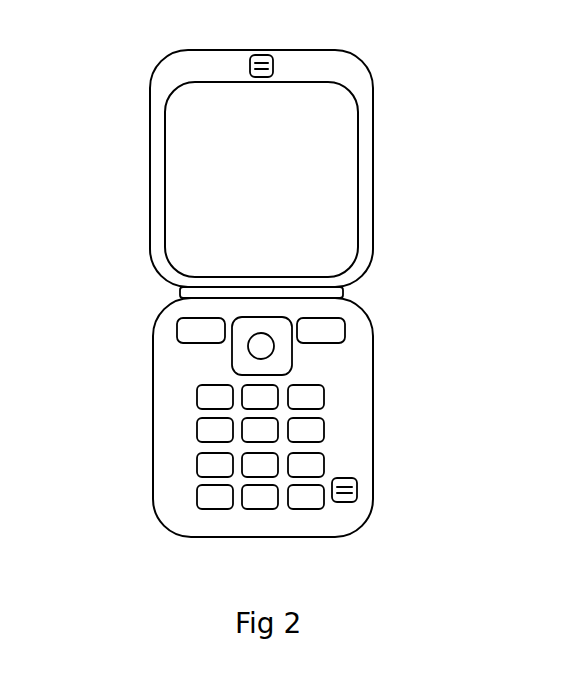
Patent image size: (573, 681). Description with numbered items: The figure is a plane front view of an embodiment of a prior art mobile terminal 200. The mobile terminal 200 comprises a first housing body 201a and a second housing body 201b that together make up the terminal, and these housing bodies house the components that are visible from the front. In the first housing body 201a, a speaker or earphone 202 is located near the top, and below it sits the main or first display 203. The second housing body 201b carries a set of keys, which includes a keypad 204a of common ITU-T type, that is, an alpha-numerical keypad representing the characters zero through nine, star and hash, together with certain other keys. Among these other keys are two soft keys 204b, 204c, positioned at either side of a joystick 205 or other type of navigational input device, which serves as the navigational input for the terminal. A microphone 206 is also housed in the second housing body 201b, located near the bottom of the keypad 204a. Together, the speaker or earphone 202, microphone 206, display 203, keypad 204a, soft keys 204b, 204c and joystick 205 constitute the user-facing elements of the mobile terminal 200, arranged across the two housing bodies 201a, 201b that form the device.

The mobile terminal 200 is at (134, 147).
The first housing body 201a is at (373, 123).
The second housing body 201b is at (373, 485).
The speaker or earphone 202 is at (258, 55).
The main or first display 203 is at (358, 203).
The keypad 204a is at (197, 397).
The soft key 204b is at (177, 331).
The soft key 204c is at (345, 333).
The joystick 205 is at (292, 355).
The microphone 206 is at (355, 500).